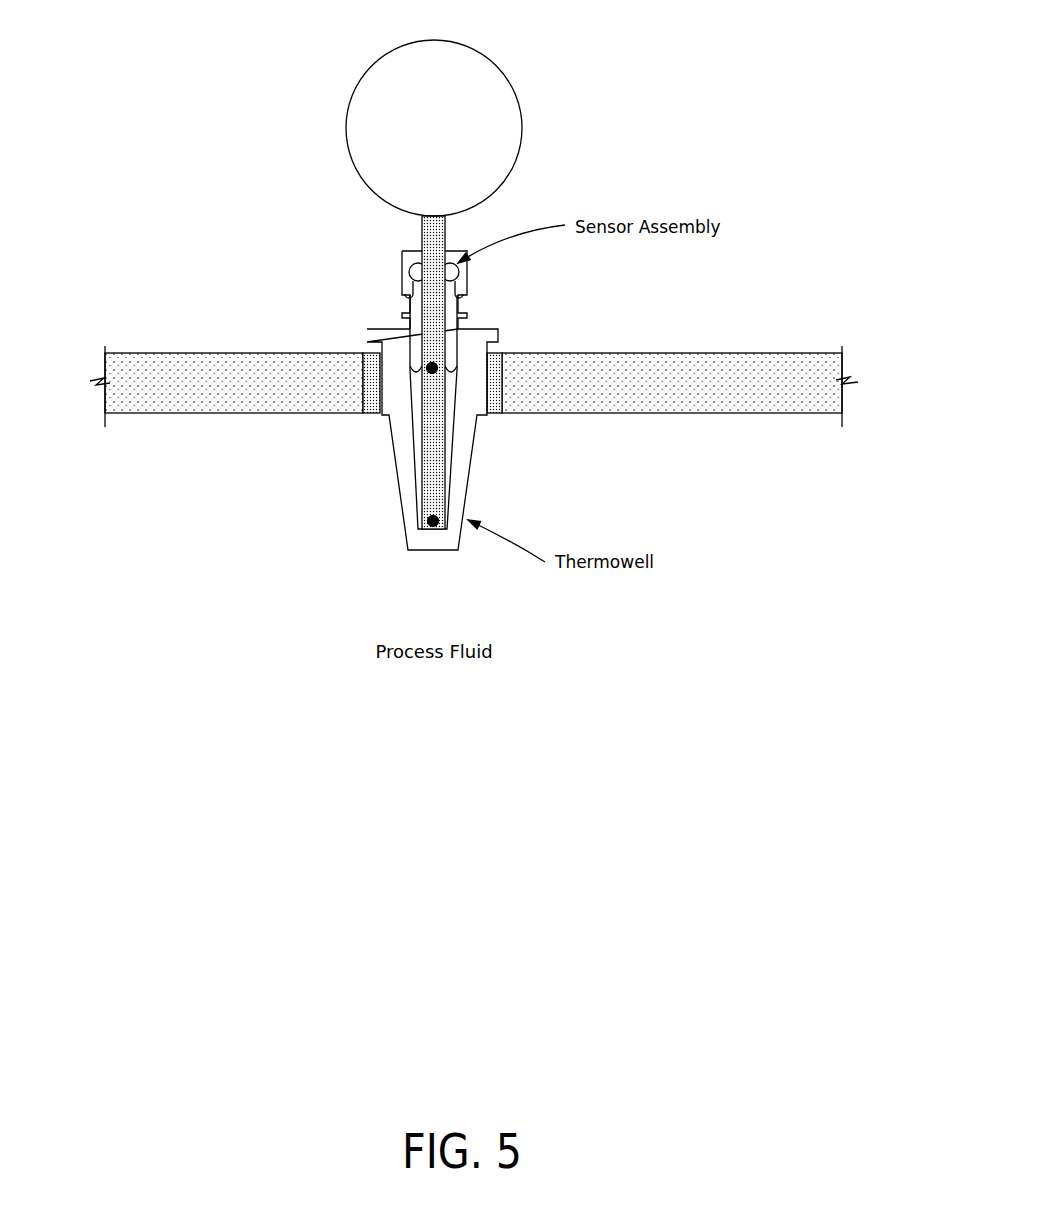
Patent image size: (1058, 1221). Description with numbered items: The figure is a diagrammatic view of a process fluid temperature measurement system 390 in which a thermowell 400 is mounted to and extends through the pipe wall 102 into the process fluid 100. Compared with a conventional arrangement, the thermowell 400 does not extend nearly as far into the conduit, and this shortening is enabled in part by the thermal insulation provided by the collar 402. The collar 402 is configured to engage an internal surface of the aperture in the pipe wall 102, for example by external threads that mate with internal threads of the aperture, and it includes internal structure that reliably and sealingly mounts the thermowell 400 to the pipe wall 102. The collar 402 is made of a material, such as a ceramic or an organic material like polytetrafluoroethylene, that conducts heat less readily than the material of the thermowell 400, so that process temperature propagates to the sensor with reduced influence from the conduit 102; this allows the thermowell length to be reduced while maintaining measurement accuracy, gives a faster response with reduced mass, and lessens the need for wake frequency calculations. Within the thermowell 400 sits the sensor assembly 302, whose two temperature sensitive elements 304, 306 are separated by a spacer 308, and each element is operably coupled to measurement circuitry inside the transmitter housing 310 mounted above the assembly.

The process fluid 100 is at (630, 761).
The pipe wall 102 is at (695, 353).
The sensor assembly 302 is at (438, 308).
The temperature sensitive element 304 is at (415, 525).
The temperature sensitive element 306 is at (423, 385).
The spacer 308 is at (438, 447).
The transmitter housing 310 is at (492, 62).
The process fluid temperature measurement system 390 is at (690, 101).
The thermowell 400 is at (500, 329).
The collar 402 is at (502, 352).